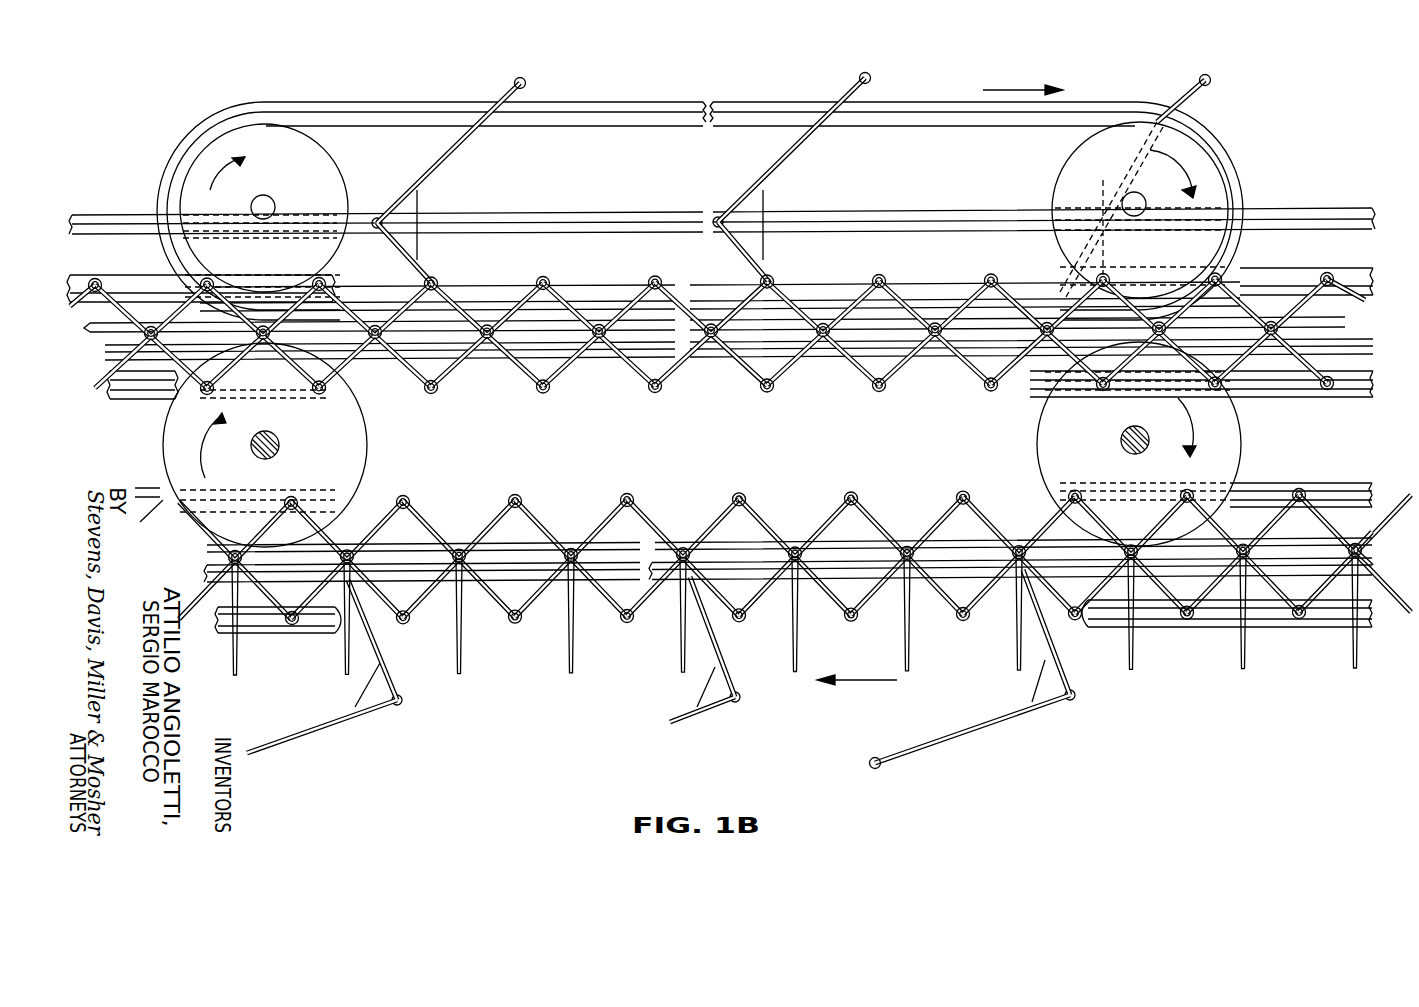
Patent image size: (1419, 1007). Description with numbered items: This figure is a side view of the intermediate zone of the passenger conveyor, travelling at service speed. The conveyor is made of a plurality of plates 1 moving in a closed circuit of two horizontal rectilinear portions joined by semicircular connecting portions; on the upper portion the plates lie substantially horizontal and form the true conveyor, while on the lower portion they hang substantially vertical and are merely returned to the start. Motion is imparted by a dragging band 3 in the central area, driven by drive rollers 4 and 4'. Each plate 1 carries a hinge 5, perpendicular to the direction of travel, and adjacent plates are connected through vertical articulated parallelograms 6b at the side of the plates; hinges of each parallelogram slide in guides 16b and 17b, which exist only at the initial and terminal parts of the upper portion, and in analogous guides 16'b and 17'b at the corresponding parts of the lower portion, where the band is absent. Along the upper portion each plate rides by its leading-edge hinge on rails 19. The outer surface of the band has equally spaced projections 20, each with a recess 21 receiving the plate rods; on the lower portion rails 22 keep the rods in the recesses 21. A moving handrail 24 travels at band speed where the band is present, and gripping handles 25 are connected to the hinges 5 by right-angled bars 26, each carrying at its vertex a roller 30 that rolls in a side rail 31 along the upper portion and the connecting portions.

The plate 1 is at (725, 480).
The dragging band 3 is at (752, 543).
The drive roller 4 is at (292, 445).
The drive roller 4' is at (1109, 444).
The hinge 5 is at (715, 325).
The articulated parallelogram 6b is at (950, 368).
The guide 16b is at (115, 400).
The guide 16'b is at (793, 642).
The guide 17b is at (130, 275).
The guide 17'b is at (753, 476).
The rail 19 is at (600, 365).
The projection 20 is at (482, 345).
The recess 21 is at (490, 345).
The rail 22 is at (665, 580).
The moving handrail 24 is at (762, 100).
The gripping handle 25 is at (518, 78).
The bar 26 is at (455, 153).
The roller 30 is at (377, 218).
The rail 31 is at (583, 213).